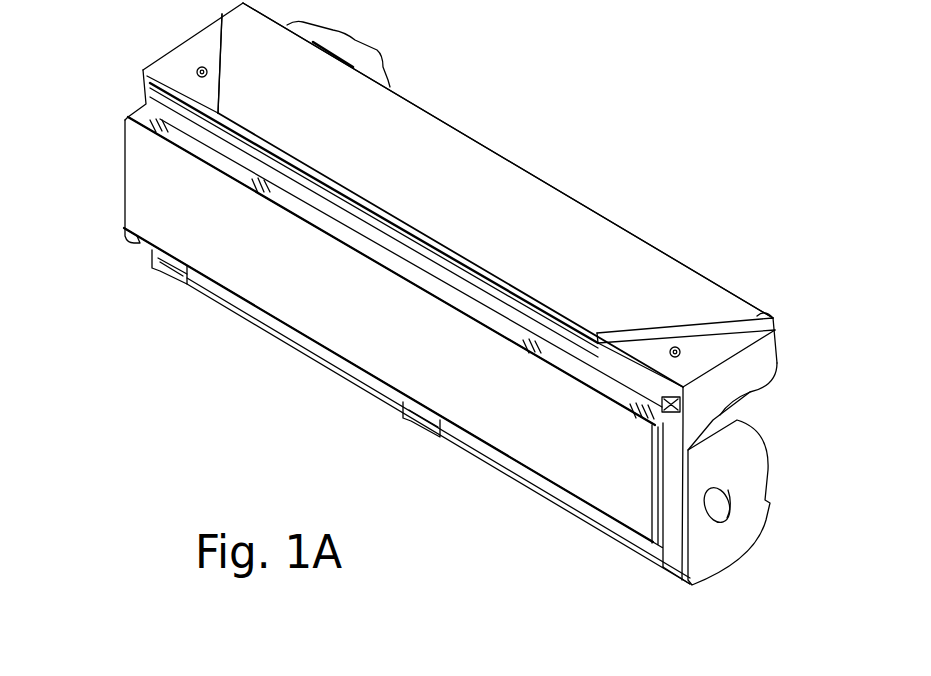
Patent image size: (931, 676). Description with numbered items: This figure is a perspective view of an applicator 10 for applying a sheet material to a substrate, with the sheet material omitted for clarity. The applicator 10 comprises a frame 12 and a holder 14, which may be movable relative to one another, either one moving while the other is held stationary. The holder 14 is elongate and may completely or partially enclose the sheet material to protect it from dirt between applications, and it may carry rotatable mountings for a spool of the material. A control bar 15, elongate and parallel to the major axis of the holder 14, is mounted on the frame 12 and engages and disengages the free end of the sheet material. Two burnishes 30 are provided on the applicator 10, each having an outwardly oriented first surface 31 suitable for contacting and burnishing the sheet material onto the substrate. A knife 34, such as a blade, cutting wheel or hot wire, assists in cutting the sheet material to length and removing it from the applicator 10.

The applicator 10 is at (575, 150).
The frame 12 is at (752, 378).
The holder 14 is at (727, 547).
The control bar 15 is at (143, 105).
The burnish 30 is at (697, 307).
The first surface 31 is at (446, 197).
The knife 34 is at (362, 60).